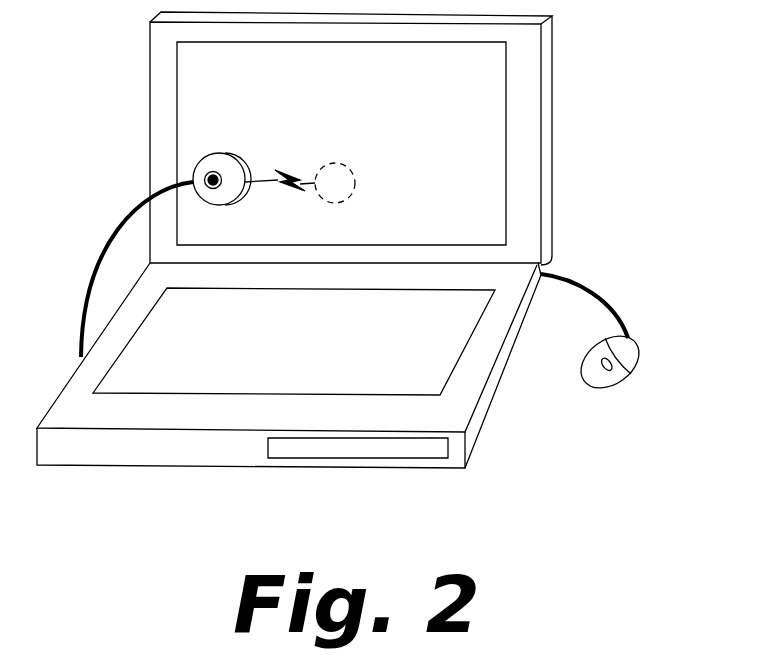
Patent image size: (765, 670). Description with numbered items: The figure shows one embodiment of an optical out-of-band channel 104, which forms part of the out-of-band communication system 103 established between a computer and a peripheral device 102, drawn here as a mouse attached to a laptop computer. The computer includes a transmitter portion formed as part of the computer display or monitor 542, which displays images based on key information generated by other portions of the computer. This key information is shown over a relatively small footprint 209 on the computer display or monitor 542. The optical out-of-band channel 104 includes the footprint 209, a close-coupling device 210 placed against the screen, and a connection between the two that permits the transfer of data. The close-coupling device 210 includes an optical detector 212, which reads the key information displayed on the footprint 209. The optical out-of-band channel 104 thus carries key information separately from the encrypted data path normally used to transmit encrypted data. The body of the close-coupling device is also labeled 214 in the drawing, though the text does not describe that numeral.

The out-of-band communication system 103 is at (365, 240).
The computer display or monitor 542 is at (551, 110).
The webcam body 214 is at (215, 153).
The close-coupling device 210 is at (243, 167).
The optical detector 212 is at (213, 180).
The optical out-of-band channel 104 is at (253, 107).
The footprint 209 is at (357, 188).
The peripheral device 102 is at (640, 340).